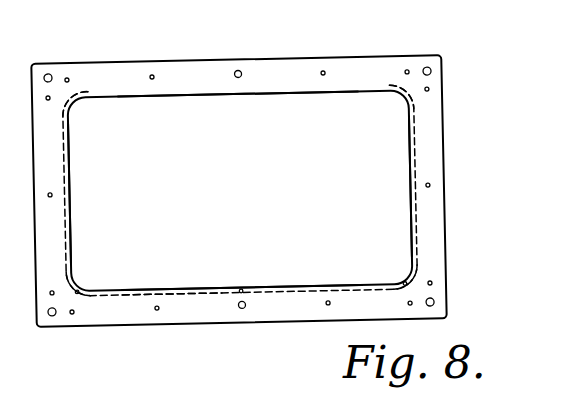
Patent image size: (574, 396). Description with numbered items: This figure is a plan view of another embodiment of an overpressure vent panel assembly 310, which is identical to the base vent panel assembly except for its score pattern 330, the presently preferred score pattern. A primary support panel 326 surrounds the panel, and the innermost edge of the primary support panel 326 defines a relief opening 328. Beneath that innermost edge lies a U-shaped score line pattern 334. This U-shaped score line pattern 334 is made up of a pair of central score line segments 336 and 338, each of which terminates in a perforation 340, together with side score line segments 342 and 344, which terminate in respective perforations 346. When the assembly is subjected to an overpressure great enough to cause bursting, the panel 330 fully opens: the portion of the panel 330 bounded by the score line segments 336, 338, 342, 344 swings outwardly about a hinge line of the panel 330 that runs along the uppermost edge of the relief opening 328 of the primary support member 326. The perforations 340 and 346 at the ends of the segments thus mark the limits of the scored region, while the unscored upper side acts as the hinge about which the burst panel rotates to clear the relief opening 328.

The overpressure vent panel assembly 310 is at (131, 57).
The primary support panel 326 is at (302, 70).
The relief opening 328 is at (343, 93).
The score pattern 330 is at (208, 103).
The U-shaped score line pattern 334 is at (67, 202).
The central score line segment 336 is at (168, 293).
The central score line segment 338 is at (318, 291).
The perforation 340 is at (80, 287).
The side score line segment 342 is at (69, 145).
The side score line segment 344 is at (408, 157).
The perforation 346 is at (87, 84).